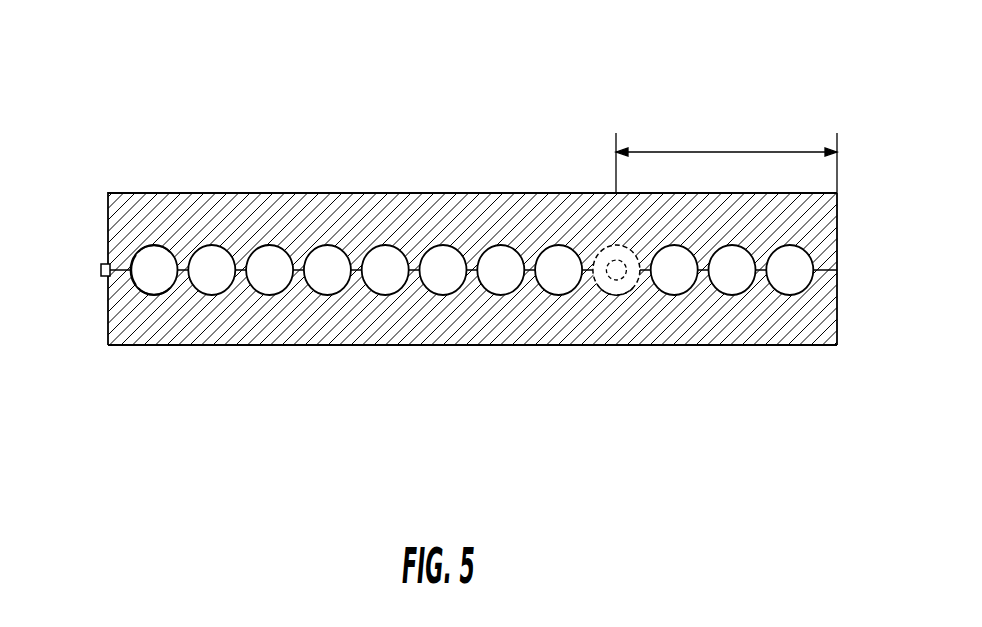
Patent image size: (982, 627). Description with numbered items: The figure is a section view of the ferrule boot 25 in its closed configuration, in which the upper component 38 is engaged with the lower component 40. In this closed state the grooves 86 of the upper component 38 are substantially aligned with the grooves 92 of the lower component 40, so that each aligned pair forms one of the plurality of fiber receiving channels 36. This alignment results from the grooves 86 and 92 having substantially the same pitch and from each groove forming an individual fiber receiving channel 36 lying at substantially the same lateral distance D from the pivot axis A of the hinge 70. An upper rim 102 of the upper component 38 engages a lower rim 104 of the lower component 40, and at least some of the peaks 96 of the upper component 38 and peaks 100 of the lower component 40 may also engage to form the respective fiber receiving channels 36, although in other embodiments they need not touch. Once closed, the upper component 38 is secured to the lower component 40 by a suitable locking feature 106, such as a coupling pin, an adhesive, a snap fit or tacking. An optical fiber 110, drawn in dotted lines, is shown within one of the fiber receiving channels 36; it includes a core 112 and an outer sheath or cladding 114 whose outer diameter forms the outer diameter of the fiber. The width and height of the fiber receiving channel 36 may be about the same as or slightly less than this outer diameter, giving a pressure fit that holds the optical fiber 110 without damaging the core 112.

The ferrule boot 25 is at (465, 206).
The fiber receiving channel 36 is at (158, 262).
The upper component 38 is at (312, 202).
The lower component 40 is at (517, 347).
The hinge 70 is at (837, 293).
The groove of the upper component 86 is at (153, 244).
The groove of the lower component 92 is at (153, 290).
The peak of the upper component 96 is at (443, 247).
The peak of the lower component 100 is at (528, 272).
The upper rim 102 is at (117, 265).
The lower rim 104 is at (131, 272).
The locking feature 106 is at (100, 269).
The optical fiber 110 is at (625, 294).
The core 112 is at (623, 259).
The cladding 114 is at (606, 246).
The lateral distance D is at (708, 152).
The pivot axis A is at (837, 270).